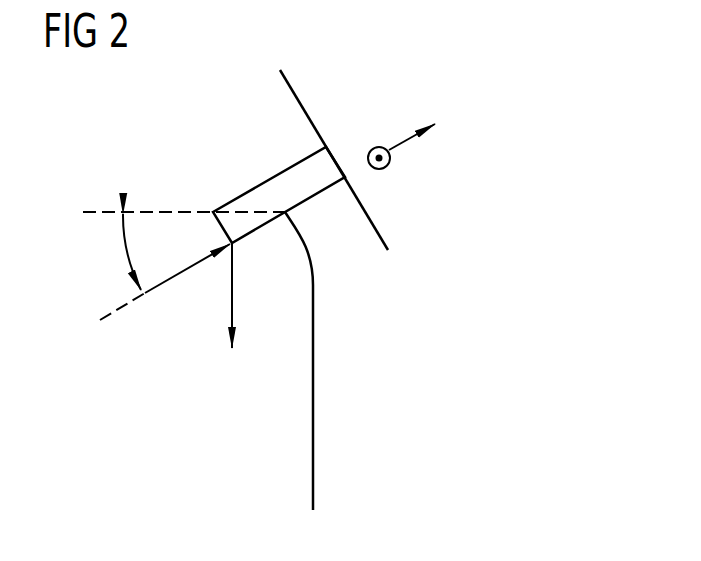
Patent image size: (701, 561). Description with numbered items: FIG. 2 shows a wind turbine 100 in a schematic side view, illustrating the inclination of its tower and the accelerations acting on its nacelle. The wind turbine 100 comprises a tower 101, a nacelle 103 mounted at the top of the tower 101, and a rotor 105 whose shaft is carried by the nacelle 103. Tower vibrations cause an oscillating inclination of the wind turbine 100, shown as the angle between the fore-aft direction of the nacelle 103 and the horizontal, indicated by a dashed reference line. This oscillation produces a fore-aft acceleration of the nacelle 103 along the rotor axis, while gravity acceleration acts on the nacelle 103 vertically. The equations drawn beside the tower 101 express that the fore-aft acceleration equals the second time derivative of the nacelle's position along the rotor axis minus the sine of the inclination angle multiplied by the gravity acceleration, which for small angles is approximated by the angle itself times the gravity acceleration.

The wind turbine 100 is at (175, 149).
The tower 101 is at (313, 323).
The nacelle 103 is at (268, 173).
The rotor 105 is at (328, 83).